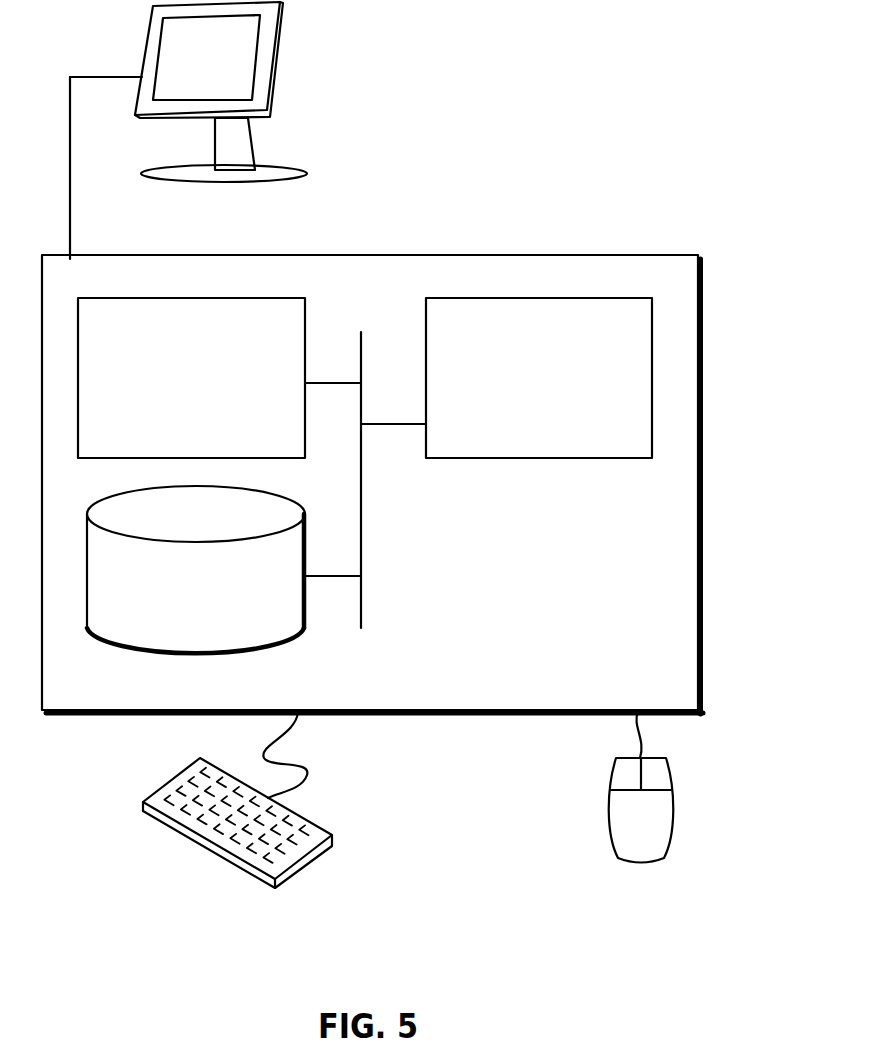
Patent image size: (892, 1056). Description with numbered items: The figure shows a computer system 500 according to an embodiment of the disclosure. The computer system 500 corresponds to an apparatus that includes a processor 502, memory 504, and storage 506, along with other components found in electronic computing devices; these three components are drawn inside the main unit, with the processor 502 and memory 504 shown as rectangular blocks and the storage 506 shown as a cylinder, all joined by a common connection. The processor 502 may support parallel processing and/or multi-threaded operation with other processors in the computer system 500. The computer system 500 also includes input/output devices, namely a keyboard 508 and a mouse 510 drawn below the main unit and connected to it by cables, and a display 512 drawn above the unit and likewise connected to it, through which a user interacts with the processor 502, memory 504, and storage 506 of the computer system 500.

The computer system 500 is at (415, 233).
The processor 502 is at (522, 390).
The memory 504 is at (172, 390).
The storage 506 is at (178, 601).
The keyboard 508 is at (163, 820).
The mouse 510 is at (620, 832).
The display 512 is at (221, 106).